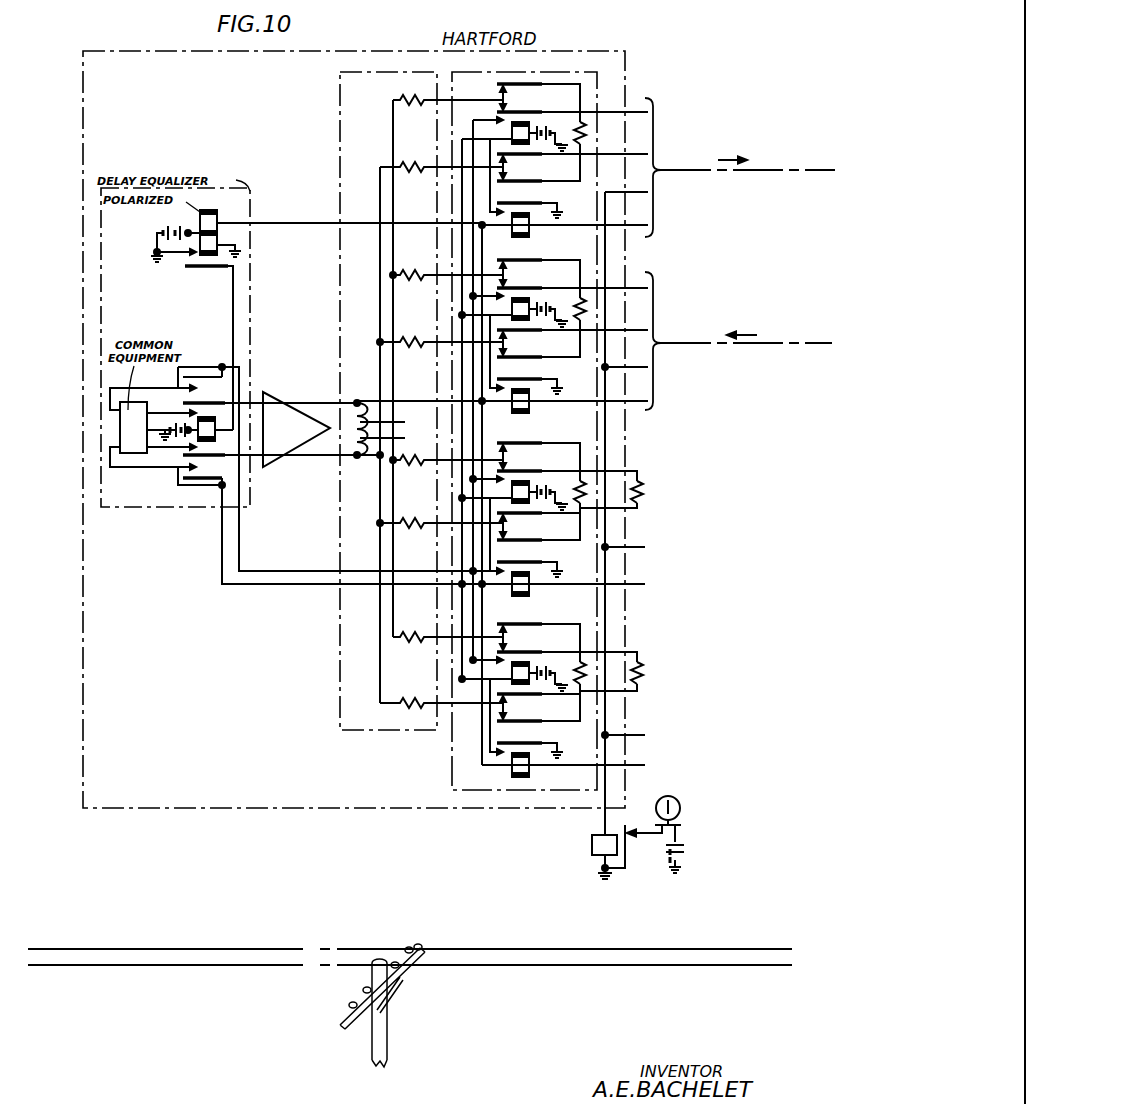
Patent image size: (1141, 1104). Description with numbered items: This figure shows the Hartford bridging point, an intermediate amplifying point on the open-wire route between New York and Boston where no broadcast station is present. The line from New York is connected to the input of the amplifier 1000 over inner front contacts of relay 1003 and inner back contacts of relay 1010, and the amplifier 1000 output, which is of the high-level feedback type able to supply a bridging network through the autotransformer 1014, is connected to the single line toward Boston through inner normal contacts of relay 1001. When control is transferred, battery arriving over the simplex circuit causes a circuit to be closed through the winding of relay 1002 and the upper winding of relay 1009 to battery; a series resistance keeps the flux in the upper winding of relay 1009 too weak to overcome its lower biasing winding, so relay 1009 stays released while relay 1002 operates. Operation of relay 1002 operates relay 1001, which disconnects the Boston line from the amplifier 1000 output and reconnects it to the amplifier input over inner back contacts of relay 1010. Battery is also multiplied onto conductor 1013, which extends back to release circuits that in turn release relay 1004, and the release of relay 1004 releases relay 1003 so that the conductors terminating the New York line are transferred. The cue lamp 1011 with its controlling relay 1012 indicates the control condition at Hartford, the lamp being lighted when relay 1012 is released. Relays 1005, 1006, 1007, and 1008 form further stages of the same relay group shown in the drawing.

The amplifier 1000 is at (272, 402).
The relay 1001 is at (513, 126).
The relay 1002 is at (530, 231).
The relay 1003 is at (518, 298).
The relay 1004 is at (530, 407).
The polar relay 1005 is at (518, 481).
The relay 1006 is at (530, 590).
The polar relay 1007 is at (518, 662).
The relay 1008 is at (530, 771).
The relay 1009 is at (218, 206).
The relay 1010 is at (208, 444).
The cue lamp 1011 is at (682, 810).
The relay 1012 is at (592, 842).
The conductor 1013 is at (635, 368).
The autotransformer 1014 is at (350, 413).